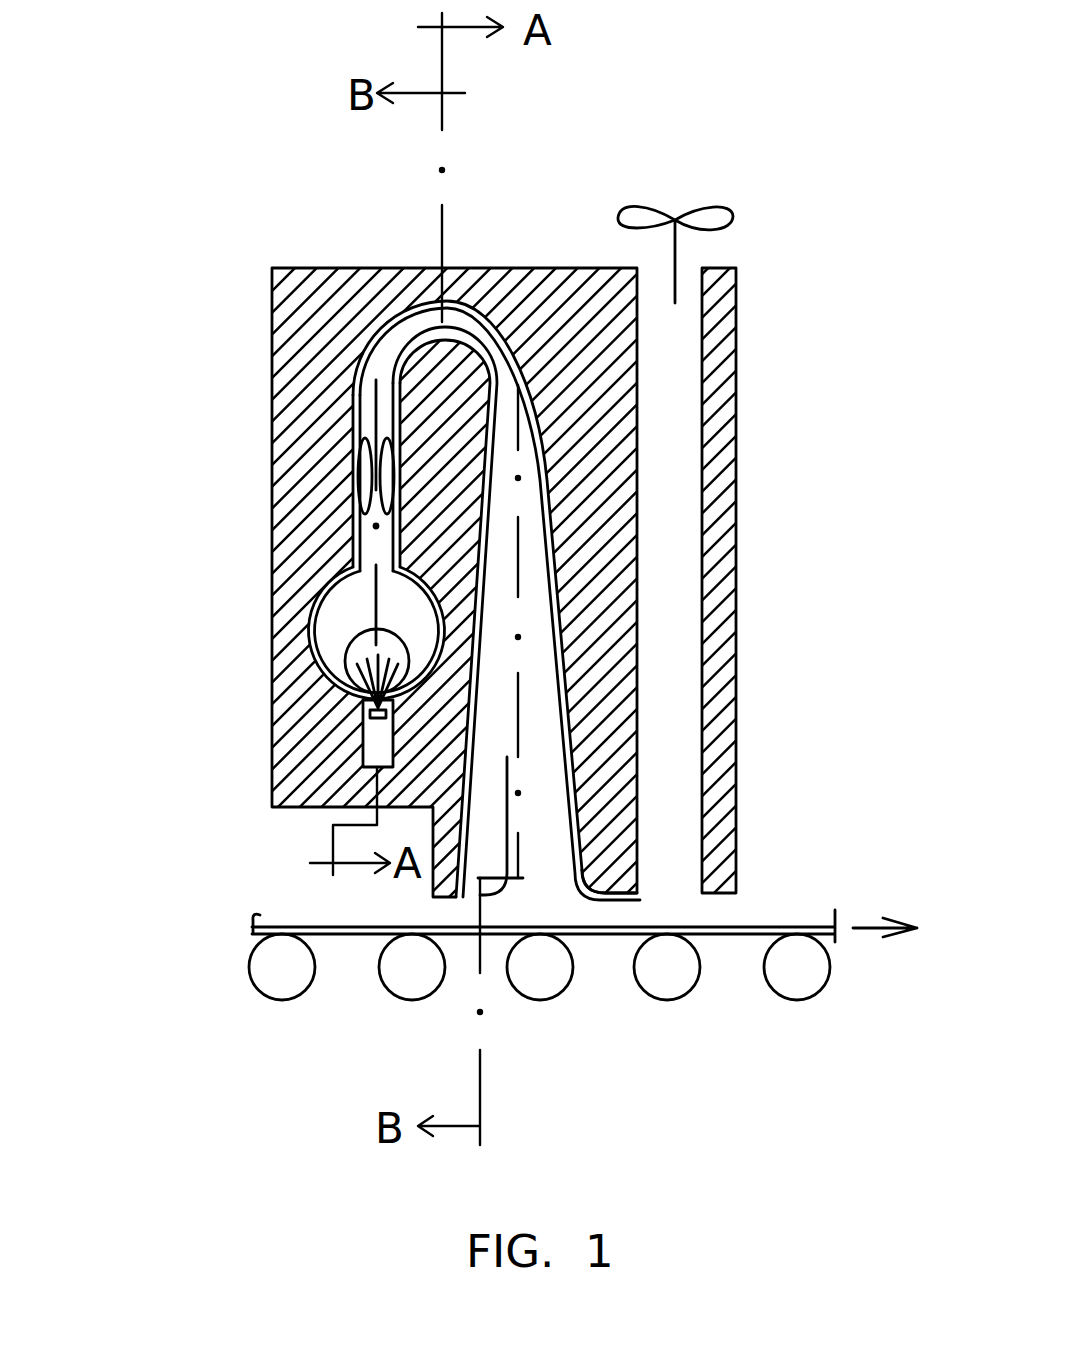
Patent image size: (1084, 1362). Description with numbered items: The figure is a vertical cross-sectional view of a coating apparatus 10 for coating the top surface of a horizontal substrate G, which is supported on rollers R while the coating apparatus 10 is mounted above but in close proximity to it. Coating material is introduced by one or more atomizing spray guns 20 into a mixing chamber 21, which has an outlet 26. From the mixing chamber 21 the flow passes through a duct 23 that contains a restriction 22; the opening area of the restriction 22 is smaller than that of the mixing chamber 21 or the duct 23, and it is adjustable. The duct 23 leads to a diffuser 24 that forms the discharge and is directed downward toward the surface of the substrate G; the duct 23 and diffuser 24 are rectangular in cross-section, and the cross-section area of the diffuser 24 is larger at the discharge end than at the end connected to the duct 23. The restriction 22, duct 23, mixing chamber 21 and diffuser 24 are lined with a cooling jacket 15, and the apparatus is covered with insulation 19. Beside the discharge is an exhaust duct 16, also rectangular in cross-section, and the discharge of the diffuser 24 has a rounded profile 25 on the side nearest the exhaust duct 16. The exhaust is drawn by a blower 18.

The coating apparatus 10 is at (276, 188).
The cooling jacket 15 is at (372, 335).
The exhaust duct 16 is at (673, 630).
The blower 18 is at (676, 206).
The insulation 19 is at (555, 303).
The atomizing spray gun 20 is at (363, 765).
The mixing chamber 21 is at (345, 611).
The restriction 22 is at (368, 480).
The duct 23 is at (417, 330).
The diffuser 24 is at (477, 903).
The rounded profile 25 is at (578, 893).
The outlet 26 is at (340, 660).
The substrate G is at (777, 926).
The rollers R is at (777, 998).